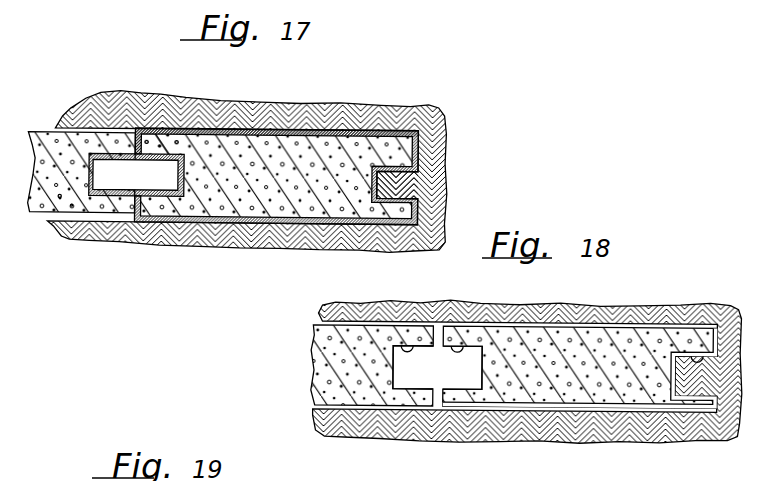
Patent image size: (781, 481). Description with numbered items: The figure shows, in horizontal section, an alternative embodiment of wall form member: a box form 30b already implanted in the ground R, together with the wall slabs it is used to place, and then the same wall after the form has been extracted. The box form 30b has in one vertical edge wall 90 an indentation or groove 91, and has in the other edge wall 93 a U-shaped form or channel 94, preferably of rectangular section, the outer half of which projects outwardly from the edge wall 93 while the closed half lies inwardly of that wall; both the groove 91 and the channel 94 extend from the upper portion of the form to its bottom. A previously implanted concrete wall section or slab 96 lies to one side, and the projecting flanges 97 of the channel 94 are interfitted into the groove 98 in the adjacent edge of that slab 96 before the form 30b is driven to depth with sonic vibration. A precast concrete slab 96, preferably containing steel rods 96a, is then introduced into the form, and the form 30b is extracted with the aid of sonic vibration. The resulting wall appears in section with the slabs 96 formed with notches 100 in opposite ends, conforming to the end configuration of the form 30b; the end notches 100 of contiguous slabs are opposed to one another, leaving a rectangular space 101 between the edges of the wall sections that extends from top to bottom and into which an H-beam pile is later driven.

In FIG. 17, the ground R is at (240, 113).
In FIG. 18, the ground R is at (527, 372).
In FIG. 17, the concrete wall section or slab 96 is at (37, 131).
In FIG. 18, the concrete wall section or slab 96 is at (353, 332).
In FIG. 18, the steel rods 96a is at (560, 325).
In FIG. 17, the projecting flanges 97 is at (97, 153).
In FIG. 17, the groove 98 is at (87, 162).
In FIG. 17, the edge wall 93 is at (133, 149).
In FIG. 17, the U-shaped form or channel 94 is at (158, 150).
In FIG. 17, the box form 30b is at (336, 126).
In FIG. 17, the vertical edge wall 90 is at (418, 148).
In FIG. 17, the indentation or groove 91 is at (397, 175).
In FIG. 18, the notches 100 is at (455, 345).
In FIG. 18, the rectangular space 101 is at (427, 377).